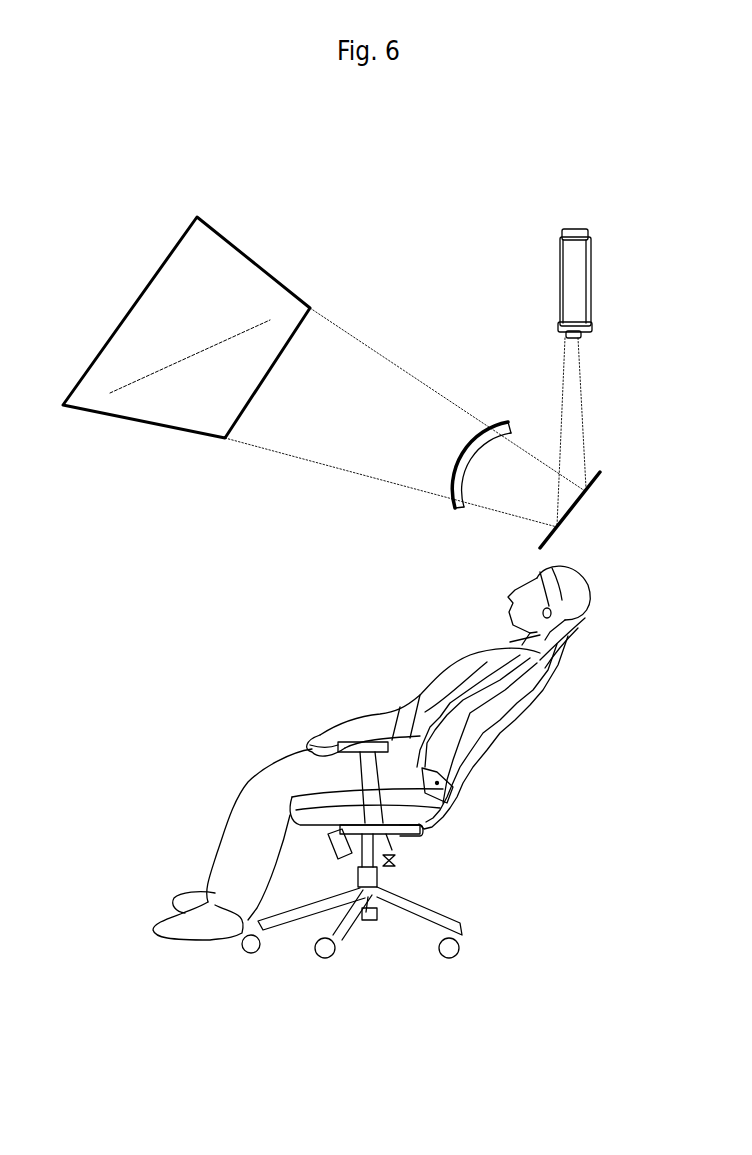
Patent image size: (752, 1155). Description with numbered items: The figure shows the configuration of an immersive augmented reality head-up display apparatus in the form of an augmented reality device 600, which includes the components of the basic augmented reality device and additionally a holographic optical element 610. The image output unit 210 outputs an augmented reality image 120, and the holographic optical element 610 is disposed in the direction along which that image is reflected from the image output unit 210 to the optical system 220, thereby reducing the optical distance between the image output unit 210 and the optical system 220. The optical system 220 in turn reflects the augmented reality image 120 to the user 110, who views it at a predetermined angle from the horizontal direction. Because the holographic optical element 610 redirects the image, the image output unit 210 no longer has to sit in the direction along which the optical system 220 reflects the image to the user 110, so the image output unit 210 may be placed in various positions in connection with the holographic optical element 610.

The augmented reality device 600 is at (537, 163).
The augmented reality image 120 is at (262, 270).
The image output unit 210 is at (592, 281).
The optical system 220 is at (498, 420).
The holographic optical element 610 is at (580, 497).
The user 110 is at (487, 747).